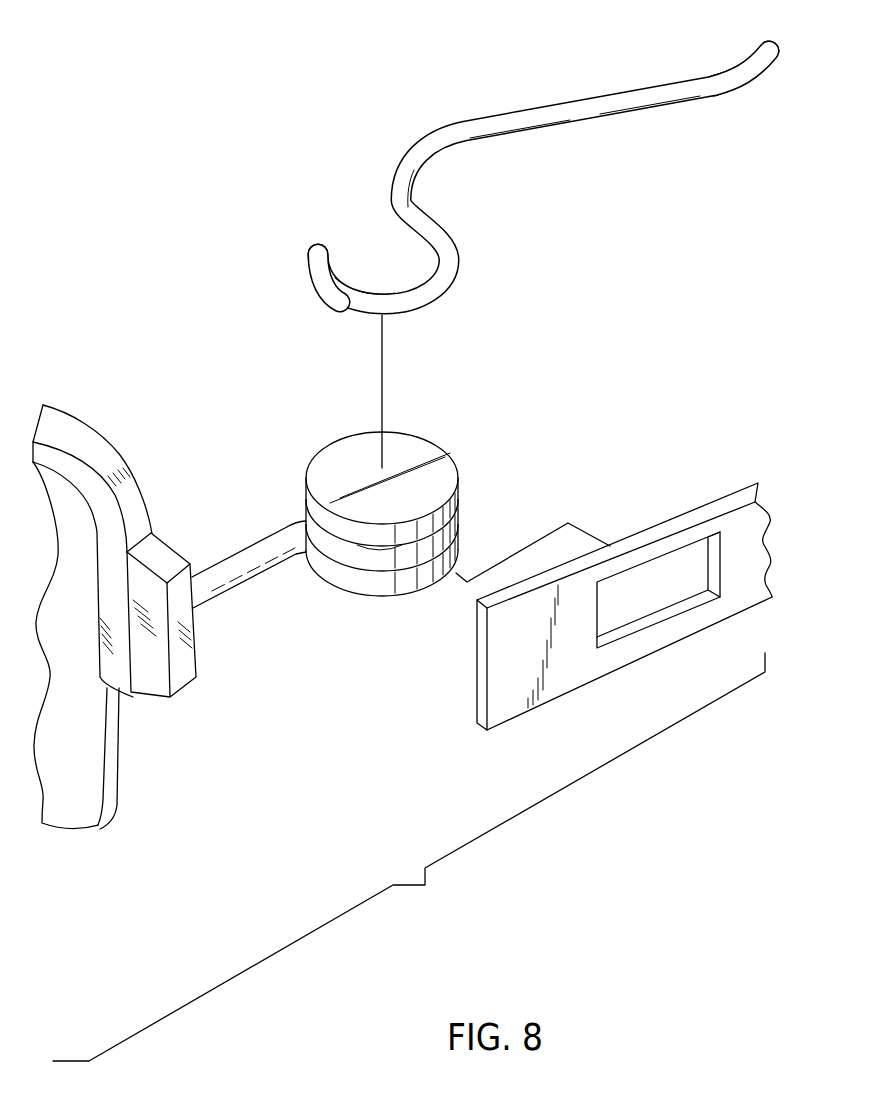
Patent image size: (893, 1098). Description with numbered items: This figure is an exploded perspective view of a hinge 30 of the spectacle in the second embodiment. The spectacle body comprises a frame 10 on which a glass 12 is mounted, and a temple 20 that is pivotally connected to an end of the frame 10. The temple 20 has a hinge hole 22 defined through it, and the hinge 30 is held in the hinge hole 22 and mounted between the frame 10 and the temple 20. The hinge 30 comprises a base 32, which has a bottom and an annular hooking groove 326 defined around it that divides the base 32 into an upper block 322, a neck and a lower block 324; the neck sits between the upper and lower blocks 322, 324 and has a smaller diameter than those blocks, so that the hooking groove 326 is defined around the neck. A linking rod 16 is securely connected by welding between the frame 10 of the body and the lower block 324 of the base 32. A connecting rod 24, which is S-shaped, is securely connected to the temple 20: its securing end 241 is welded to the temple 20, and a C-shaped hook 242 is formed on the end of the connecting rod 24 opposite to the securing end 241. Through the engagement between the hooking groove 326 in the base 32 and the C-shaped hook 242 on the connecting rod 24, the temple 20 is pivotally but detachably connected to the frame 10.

The frame 10 is at (114, 612).
The glass 12 is at (93, 742).
The linking rod 16 is at (233, 565).
The temple 20 is at (624, 588).
The hinge hole 22 is at (655, 620).
The connecting rod 24 is at (505, 153).
The securing end 241 is at (752, 45).
The C-shaped hook 242 is at (317, 272).
The hinge 30 is at (297, 405).
The base 32 is at (425, 516).
The upper block 322 is at (418, 452).
The lower block 324 is at (400, 582).
The hooking groove 326 is at (443, 535).